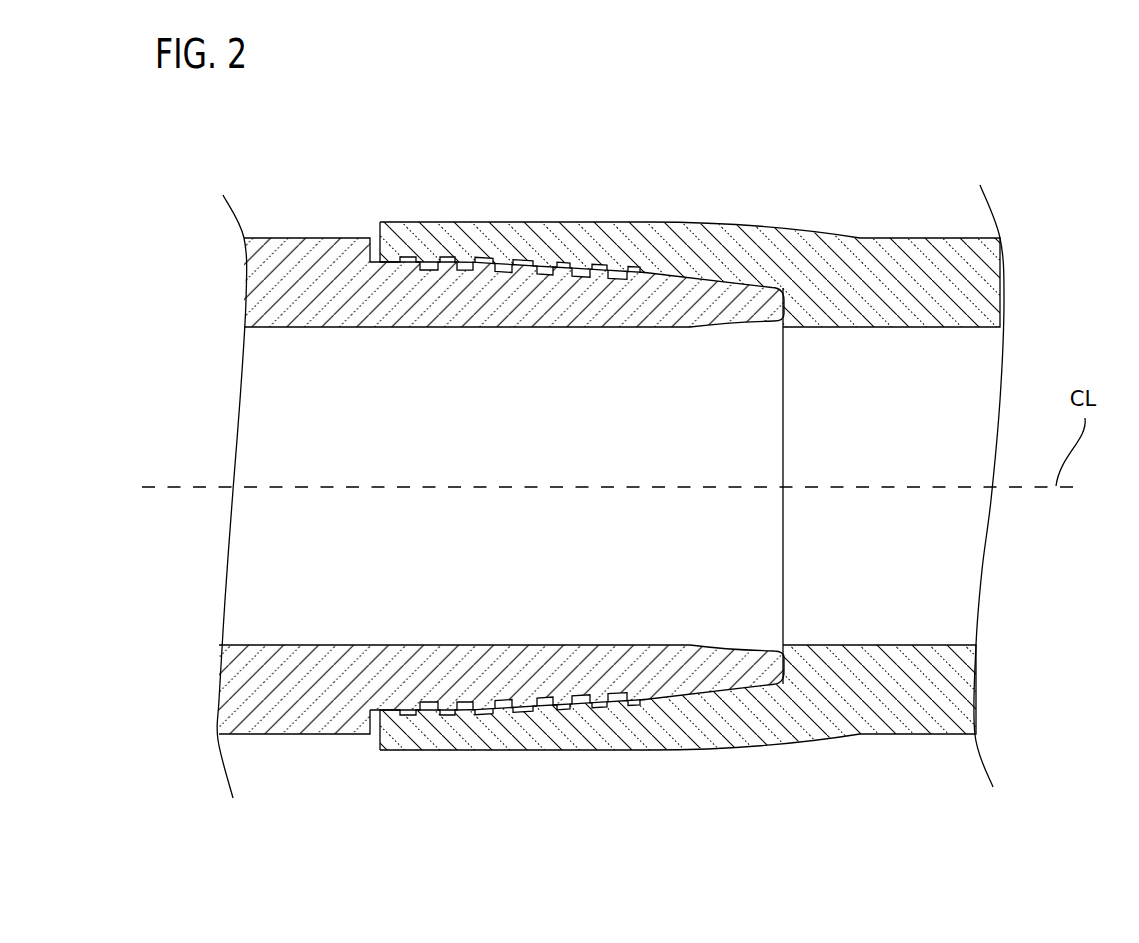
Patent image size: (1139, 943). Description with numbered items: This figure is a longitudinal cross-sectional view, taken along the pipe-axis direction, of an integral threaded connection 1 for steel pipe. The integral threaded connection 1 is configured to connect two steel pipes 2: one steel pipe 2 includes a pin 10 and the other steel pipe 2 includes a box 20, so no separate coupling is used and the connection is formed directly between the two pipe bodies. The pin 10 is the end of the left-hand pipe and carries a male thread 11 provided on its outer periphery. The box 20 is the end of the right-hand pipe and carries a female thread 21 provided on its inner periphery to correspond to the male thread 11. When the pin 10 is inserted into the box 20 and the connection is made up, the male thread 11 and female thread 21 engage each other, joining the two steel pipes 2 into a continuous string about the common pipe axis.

The threaded connection 1 is at (656, 809).
The steel pipe 2 is at (292, 262).
The pin 10 is at (413, 414).
The male thread 11 is at (547, 268).
The box 20 is at (693, 182).
The female thread 21 is at (543, 272).